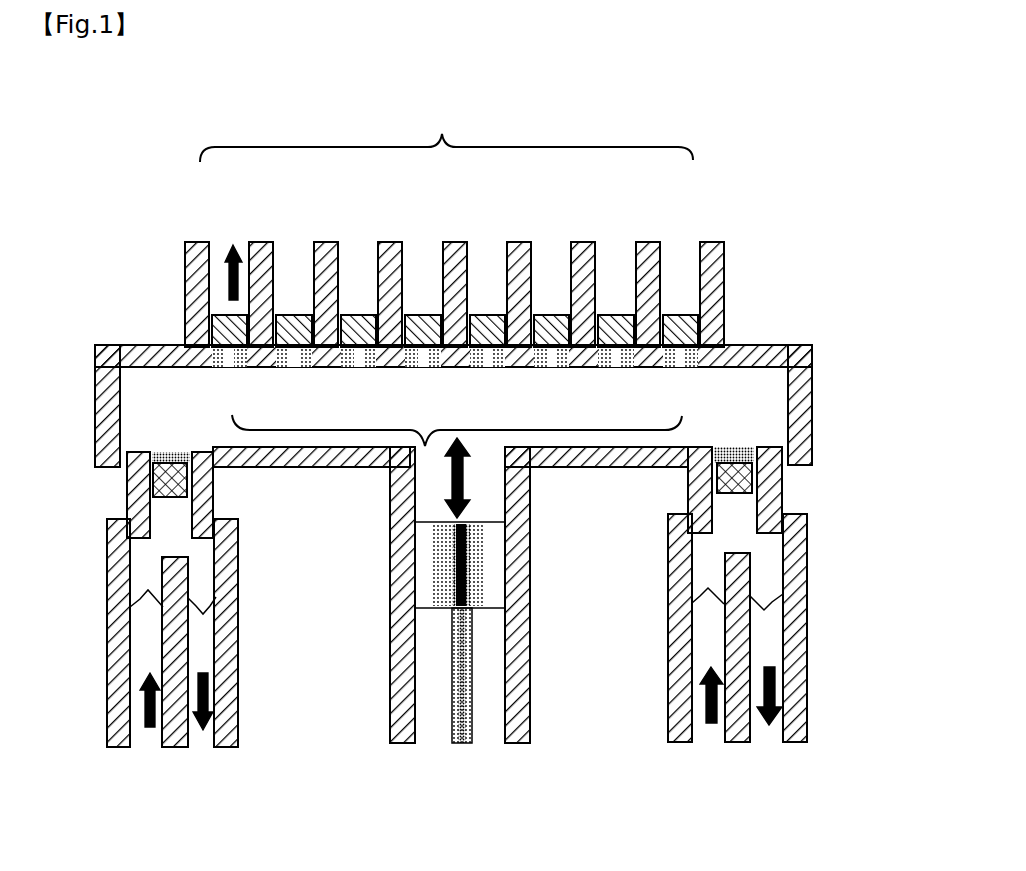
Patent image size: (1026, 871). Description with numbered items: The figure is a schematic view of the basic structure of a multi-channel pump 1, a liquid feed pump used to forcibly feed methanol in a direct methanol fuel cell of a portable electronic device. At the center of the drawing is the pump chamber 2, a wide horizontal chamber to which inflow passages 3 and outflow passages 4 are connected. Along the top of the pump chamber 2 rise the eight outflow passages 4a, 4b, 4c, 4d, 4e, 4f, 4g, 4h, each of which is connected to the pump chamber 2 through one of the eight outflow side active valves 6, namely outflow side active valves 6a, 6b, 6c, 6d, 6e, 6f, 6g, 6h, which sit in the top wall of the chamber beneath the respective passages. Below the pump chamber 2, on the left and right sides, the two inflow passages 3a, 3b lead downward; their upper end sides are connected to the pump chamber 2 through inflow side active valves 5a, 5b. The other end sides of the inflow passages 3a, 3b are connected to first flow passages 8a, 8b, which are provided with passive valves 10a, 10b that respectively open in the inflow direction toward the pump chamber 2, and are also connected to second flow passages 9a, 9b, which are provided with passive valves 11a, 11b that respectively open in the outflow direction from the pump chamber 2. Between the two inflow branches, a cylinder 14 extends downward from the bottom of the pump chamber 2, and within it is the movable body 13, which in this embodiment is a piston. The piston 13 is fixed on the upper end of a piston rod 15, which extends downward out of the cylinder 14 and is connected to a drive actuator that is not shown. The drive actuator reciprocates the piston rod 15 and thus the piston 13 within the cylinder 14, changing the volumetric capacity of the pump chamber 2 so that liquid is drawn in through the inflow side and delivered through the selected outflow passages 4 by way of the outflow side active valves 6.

The multi-channel pump 1 is at (781, 173).
The pump chamber 2 is at (765, 392).
The inflow passages 3 is at (516, 492).
The inflow passage 3a is at (172, 515).
The inflow passage 3b is at (757, 500).
The outflow passages 4 is at (454, 222).
The outflow passage 4a is at (222, 243).
The outflow passage 4b is at (295, 253).
The outflow passage 4c is at (358, 253).
The outflow passage 4d is at (426, 253).
The outflow passage 4e is at (488, 253).
The outflow passage 4f is at (550, 253).
The outflow passage 4g is at (613, 253).
The outflow passage 4h is at (678, 253).
The inflow side active valve 5a is at (125, 484).
The inflow side active valve 5b is at (810, 459).
The outflow side active valves 6 is at (454, 416).
The outflow side active valve 6a is at (228, 368).
The outflow side active valve 6b is at (298, 368).
The outflow side active valve 6c is at (361, 368).
The outflow side active valve 6d is at (426, 368).
The outflow side active valve 6e is at (486, 368).
The outflow side active valve 6f is at (550, 368).
The outflow side active valve 6g is at (614, 368).
The outflow side active valve 6h is at (678, 368).
The first flow passage 8a is at (150, 735).
The first flow passage 8b is at (713, 732).
The second flow passage 9a is at (203, 736).
The second flow passage 9b is at (767, 730).
The passive valve 10a is at (108, 588).
The passive valve 10b is at (672, 602).
The passive valve 11a is at (212, 597).
The passive valve 11b is at (773, 588).
The movable body 13 is at (493, 547).
The cylinder 14 is at (530, 655).
The piston rod 15 is at (455, 745).